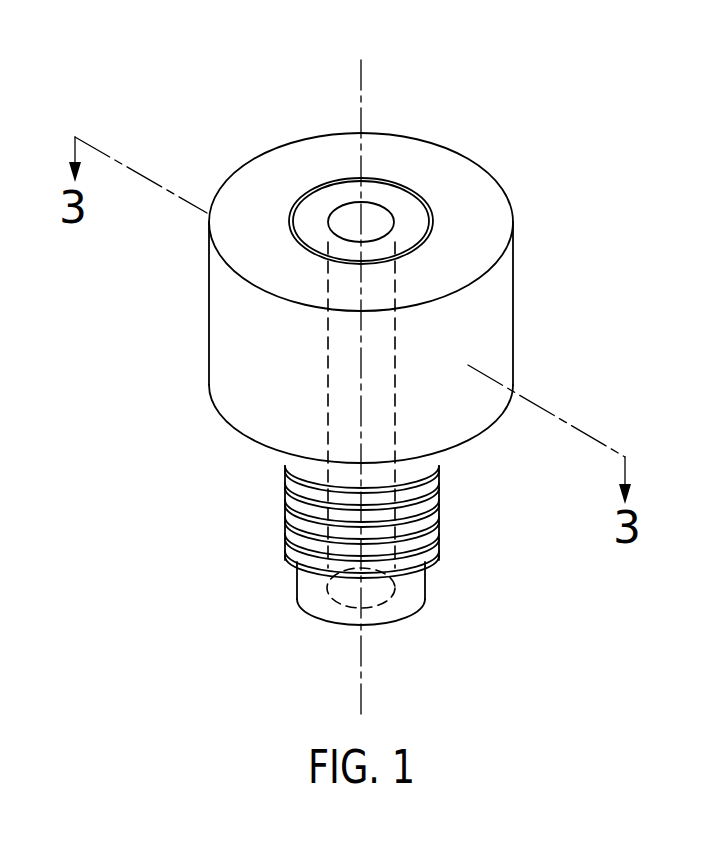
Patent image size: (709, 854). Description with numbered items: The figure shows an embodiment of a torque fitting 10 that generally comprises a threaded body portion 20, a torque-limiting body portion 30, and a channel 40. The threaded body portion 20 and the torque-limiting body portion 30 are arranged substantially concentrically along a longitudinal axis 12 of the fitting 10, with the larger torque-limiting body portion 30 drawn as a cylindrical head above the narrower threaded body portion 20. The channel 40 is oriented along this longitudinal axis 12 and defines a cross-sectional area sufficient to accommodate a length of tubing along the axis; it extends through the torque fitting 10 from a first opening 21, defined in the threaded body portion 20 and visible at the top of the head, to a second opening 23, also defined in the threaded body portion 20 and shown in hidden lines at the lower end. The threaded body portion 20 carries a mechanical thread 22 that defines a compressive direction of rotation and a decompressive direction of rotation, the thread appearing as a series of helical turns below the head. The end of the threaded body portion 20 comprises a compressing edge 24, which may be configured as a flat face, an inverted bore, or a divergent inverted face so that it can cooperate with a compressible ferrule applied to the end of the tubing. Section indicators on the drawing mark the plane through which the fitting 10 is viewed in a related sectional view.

The torque fitting 10 is at (230, 598).
The longitudinal axis 12 is at (356, 72).
The threaded body portion 20 is at (424, 575).
The first opening 21 is at (335, 206).
The mechanical thread 22 is at (285, 522).
The second opening 23 is at (345, 607).
The compressing edge 24 is at (409, 621).
The torque-limiting body portion 30 is at (510, 324).
The channel 40 is at (380, 206).